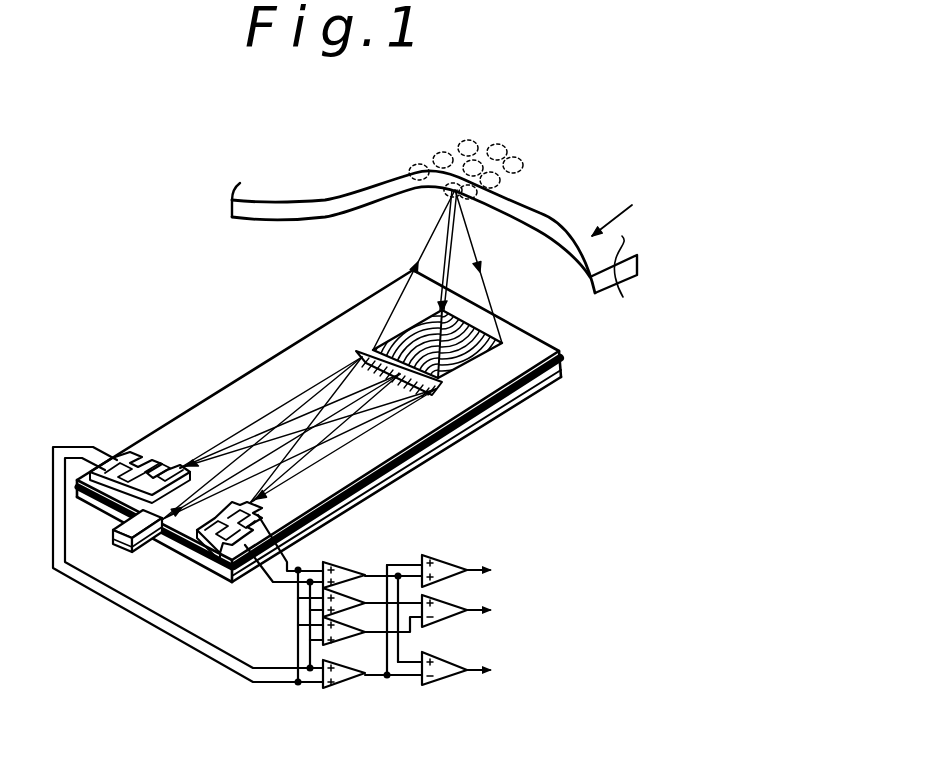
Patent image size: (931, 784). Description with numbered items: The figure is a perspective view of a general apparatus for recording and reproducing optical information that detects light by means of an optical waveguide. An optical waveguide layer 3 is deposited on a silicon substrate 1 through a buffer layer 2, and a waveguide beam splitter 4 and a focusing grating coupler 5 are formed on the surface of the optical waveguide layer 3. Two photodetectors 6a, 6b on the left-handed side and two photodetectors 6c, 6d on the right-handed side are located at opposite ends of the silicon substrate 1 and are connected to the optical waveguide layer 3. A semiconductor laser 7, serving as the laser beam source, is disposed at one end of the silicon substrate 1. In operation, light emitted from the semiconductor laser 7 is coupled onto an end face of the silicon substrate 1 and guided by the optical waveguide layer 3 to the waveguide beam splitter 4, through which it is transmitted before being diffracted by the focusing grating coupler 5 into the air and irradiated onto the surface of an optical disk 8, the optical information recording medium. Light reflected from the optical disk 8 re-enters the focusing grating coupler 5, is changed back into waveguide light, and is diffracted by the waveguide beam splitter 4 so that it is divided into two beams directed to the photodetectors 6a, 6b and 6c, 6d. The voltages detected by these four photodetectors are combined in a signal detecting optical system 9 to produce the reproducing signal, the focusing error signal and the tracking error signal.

The silicon substrate 1 is at (453, 437).
The buffer layer 2 is at (494, 402).
The optical waveguide layer 3 is at (523, 357).
The waveguide beam splitter 4 is at (367, 350).
The focusing grating coupler 5 is at (412, 333).
The photodetector 6a is at (158, 467).
The photodetector 6b is at (181, 466).
The photodetector 6c is at (199, 528).
The photodetector 6d is at (220, 547).
The semiconductor laser 7 is at (123, 550).
The optical disk 8 is at (435, 241).
The signal detecting optical system 9 is at (403, 648).